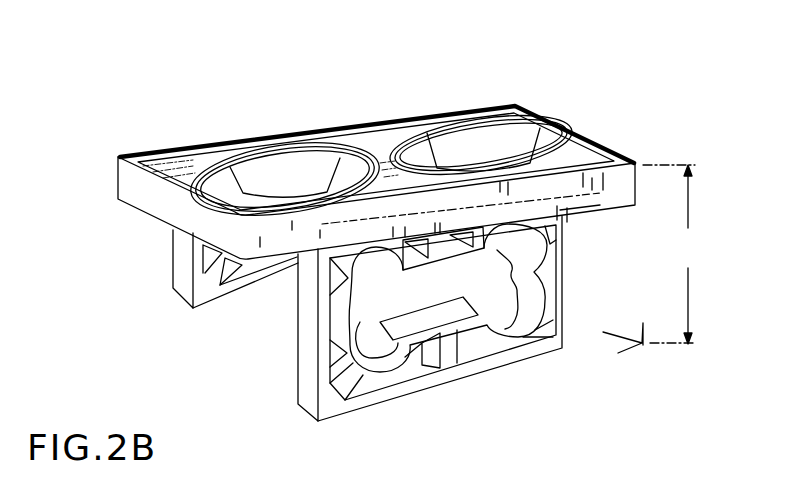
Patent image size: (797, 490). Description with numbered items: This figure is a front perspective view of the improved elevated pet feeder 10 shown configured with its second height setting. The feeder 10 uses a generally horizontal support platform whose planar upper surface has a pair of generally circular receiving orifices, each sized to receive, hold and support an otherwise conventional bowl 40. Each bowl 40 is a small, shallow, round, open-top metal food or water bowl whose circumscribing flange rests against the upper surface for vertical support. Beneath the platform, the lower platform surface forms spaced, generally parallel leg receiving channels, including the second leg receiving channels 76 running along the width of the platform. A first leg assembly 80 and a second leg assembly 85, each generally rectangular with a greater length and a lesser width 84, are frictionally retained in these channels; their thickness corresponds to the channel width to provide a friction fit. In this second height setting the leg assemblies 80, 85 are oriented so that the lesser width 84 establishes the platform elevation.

The elevated pet feeder 10 is at (614, 118).
The bowl 40 is at (247, 153).
The second leg receiving channel 76 is at (582, 208).
The first leg assembly 80 is at (184, 302).
The lesser width 84 is at (697, 265).
The second leg assembly 85 is at (355, 411).